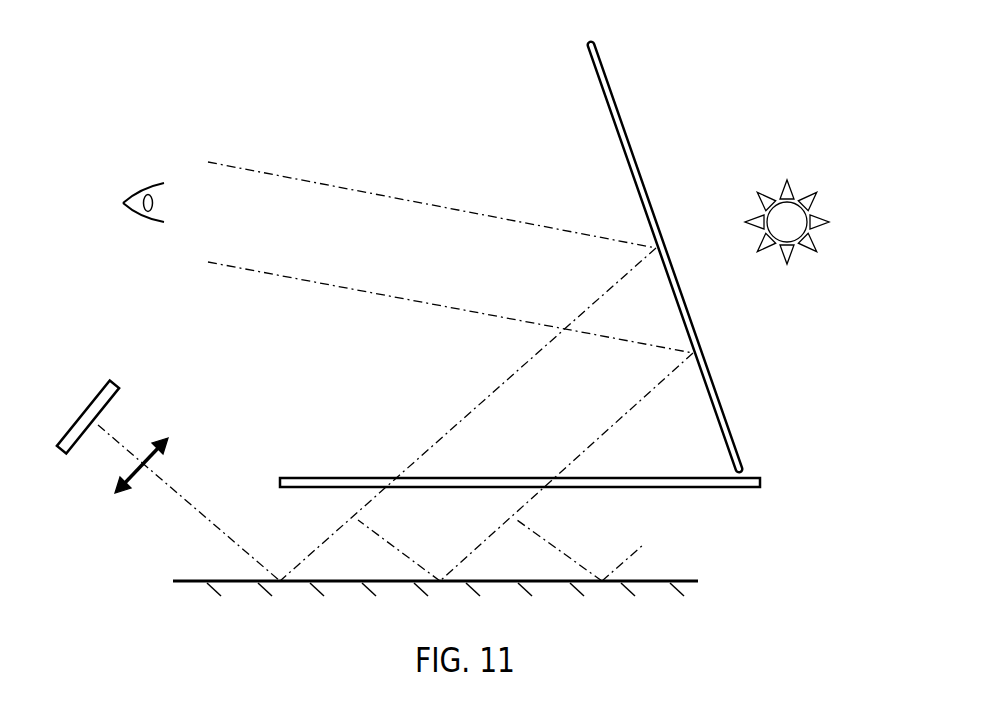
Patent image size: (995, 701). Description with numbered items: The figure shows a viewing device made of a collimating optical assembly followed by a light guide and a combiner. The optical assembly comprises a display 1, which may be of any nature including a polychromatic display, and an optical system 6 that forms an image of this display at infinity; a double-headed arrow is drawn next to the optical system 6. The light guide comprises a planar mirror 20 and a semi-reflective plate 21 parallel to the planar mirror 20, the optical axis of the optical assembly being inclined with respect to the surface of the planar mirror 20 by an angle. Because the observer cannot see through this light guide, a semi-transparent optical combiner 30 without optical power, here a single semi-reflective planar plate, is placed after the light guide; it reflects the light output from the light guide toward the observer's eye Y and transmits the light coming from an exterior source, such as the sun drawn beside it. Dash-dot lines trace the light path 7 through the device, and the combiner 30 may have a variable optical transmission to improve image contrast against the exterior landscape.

The display 1 is at (118, 392).
The optical system 6 is at (168, 438).
The reflected light ray 7 is at (628, 558).
The planar mirror 20 is at (698, 581).
The semi-reflective plate 21 is at (760, 482).
The semi-transparent optical combiner 30 is at (628, 130).
The viewer's eye Y is at (133, 212).